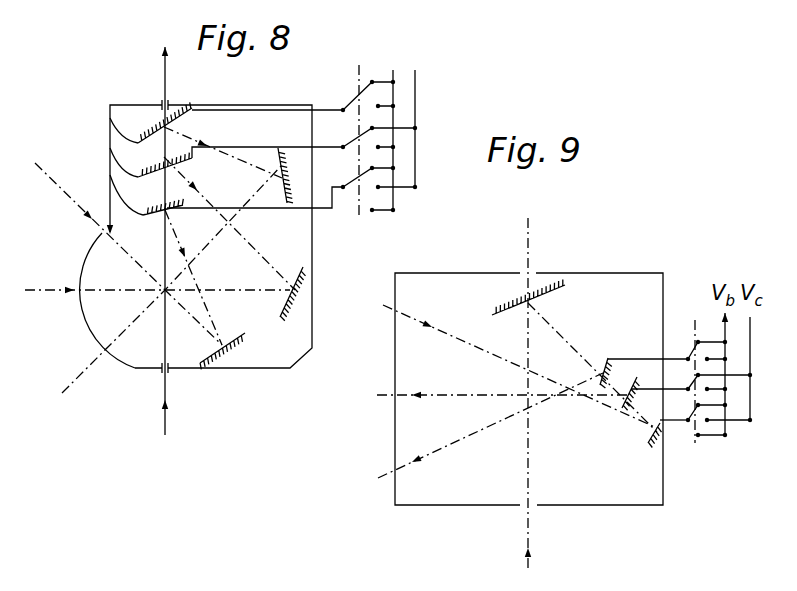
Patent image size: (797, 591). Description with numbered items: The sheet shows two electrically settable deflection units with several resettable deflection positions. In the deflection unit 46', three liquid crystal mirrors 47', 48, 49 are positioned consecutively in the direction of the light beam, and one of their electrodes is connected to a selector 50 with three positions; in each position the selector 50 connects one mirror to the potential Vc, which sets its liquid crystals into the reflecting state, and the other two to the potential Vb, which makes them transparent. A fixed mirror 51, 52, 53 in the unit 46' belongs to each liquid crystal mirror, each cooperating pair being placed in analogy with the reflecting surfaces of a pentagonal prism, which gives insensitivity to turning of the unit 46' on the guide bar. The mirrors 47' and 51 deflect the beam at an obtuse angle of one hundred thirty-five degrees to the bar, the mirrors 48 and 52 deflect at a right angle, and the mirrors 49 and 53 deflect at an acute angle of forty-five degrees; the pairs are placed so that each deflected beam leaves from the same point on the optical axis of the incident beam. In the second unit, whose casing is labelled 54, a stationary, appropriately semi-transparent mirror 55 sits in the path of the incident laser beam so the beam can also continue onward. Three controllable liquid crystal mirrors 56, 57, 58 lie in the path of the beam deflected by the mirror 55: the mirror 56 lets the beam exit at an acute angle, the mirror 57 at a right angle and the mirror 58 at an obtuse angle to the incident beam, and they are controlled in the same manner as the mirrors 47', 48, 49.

In FIG. 8, the deflection unit 46' is at (218, 236).
In FIG. 8, the liquid crystal mirror 47' is at (204, 181).
In FIG. 8, the liquid crystal mirror 48 is at (110, 142).
In FIG. 8, the liquid crystal mirror 49 is at (110, 112).
In FIG. 8, the selector 50 is at (386, 144).
In FIG. 8, the fixed mirror 51 is at (217, 366).
In FIG. 8, the fixed mirror 52 is at (305, 272).
In FIG. 8, the fixed mirror 53 is at (280, 148).
In FIG. 9, the housing 54 is at (663, 492).
In FIG. 9, the stationary mirror 55 is at (556, 284).
In FIG. 9, the controllable mirror 56 is at (605, 358).
In FIG. 9, the controllable mirror 57 is at (619, 411).
In FIG. 9, the controllable mirror 58 is at (645, 445).